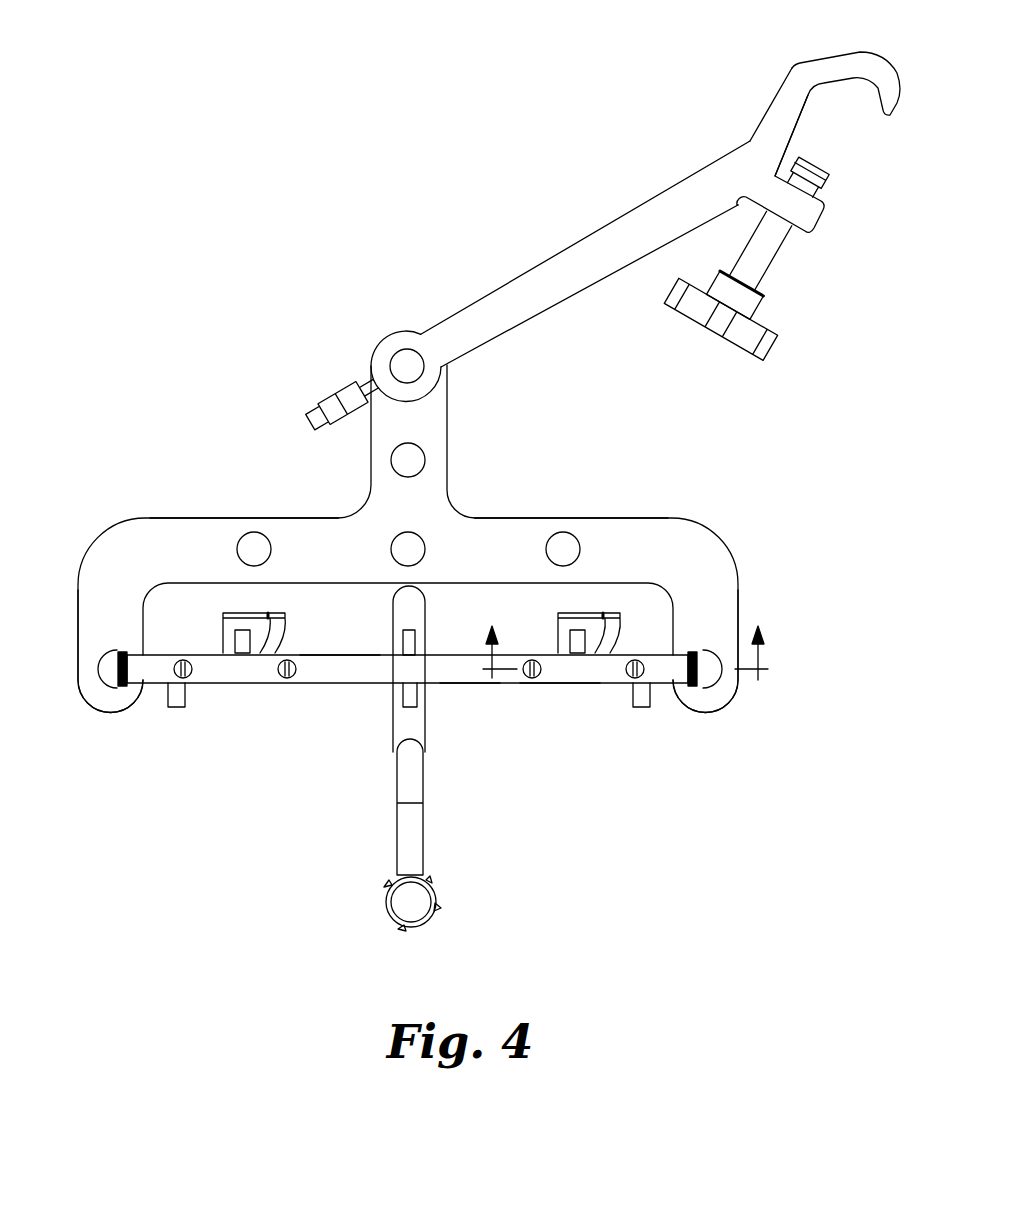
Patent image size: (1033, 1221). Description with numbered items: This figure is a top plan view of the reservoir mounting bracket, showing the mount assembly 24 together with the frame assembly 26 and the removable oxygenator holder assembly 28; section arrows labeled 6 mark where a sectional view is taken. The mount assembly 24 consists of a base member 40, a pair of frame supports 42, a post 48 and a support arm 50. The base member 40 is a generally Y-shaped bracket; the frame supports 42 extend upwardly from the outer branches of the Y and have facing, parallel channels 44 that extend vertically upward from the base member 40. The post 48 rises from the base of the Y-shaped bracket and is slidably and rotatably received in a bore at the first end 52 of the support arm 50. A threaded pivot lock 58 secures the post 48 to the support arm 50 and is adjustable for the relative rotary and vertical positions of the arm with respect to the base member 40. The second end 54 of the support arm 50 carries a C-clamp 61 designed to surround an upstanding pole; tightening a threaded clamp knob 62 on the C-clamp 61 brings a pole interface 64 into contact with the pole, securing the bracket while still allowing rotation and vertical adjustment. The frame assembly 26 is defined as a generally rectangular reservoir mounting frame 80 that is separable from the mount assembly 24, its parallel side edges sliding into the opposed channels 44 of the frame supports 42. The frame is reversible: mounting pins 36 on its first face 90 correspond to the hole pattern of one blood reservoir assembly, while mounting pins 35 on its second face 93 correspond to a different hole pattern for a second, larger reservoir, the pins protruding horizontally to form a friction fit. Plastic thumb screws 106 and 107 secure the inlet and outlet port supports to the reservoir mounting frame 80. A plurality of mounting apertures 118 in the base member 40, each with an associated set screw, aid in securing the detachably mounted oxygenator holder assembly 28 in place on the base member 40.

The mount assembly 24 is at (717, 537).
The frame assembly 26 is at (333, 687).
The oxygenator holder assembly 28 is at (387, 927).
The mounting pins 35 is at (234, 642).
The mounting pins 36 is at (175, 704).
The base member 40 is at (688, 520).
The frame supports 42 is at (103, 668).
The channels 44 is at (124, 648).
The post 48 is at (400, 355).
The support arm 50 is at (580, 247).
The first end 52 is at (428, 345).
The second end 54 is at (753, 150).
The threaded pivot lock 58 is at (302, 410).
The C-clamp 61 is at (799, 72).
The threaded clamp knob 62 is at (775, 347).
The pole interface 64 is at (829, 170).
The reservoir mounting frame 80 is at (557, 672).
The first face 90 is at (472, 684).
The second face 93 is at (343, 653).
The plastic thumb screw 106 is at (228, 616).
The plastic thumb screw 107 is at (612, 616).
The mounting apertures 118 is at (425, 461).
The section line 6 is at (625, 647).